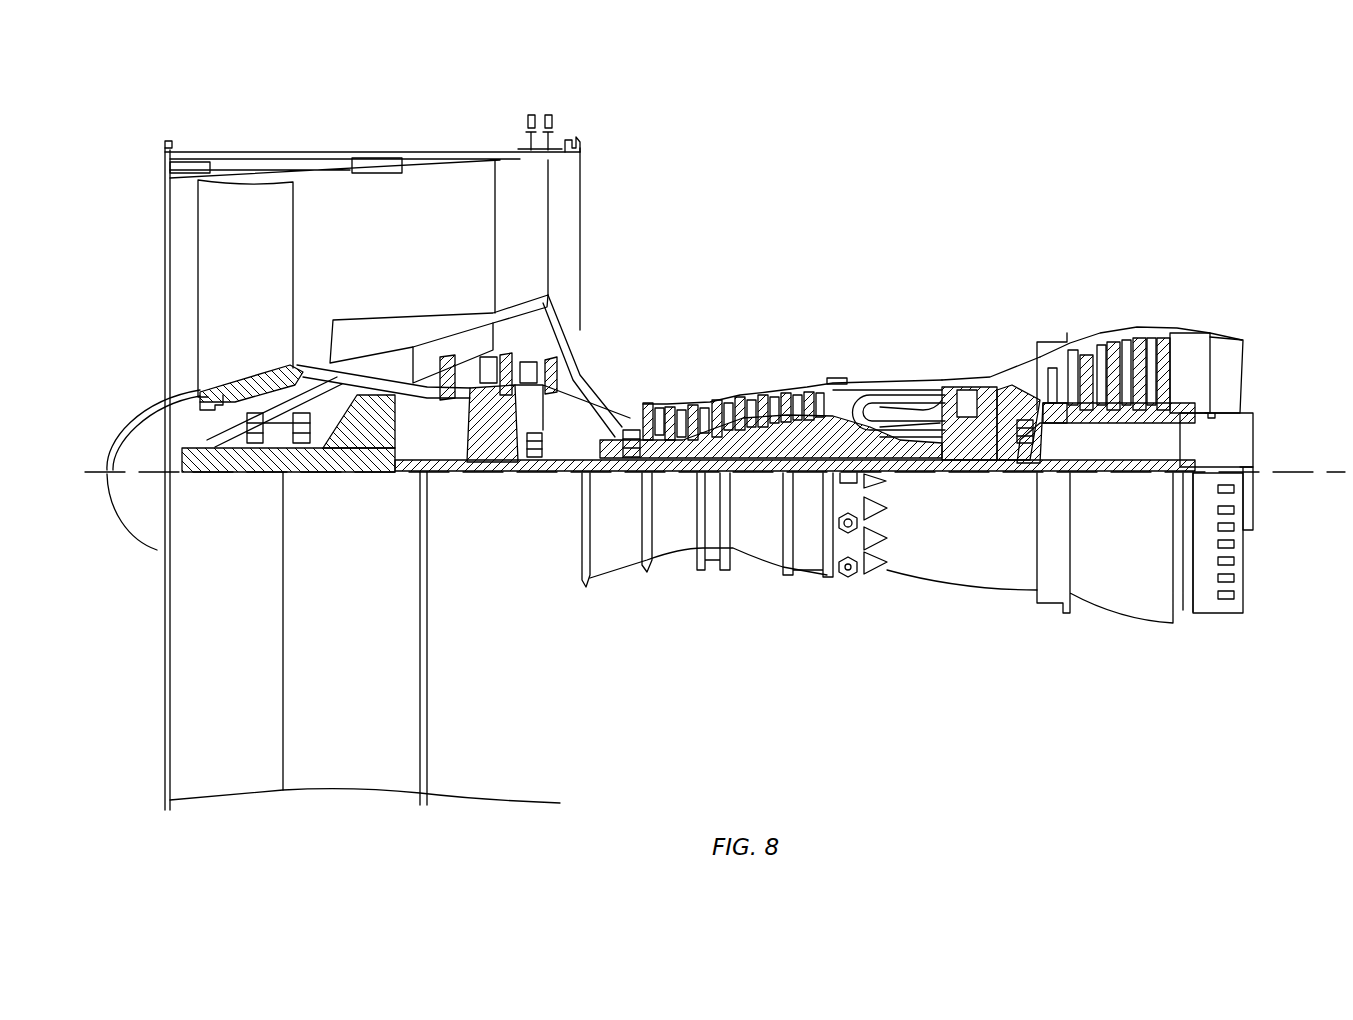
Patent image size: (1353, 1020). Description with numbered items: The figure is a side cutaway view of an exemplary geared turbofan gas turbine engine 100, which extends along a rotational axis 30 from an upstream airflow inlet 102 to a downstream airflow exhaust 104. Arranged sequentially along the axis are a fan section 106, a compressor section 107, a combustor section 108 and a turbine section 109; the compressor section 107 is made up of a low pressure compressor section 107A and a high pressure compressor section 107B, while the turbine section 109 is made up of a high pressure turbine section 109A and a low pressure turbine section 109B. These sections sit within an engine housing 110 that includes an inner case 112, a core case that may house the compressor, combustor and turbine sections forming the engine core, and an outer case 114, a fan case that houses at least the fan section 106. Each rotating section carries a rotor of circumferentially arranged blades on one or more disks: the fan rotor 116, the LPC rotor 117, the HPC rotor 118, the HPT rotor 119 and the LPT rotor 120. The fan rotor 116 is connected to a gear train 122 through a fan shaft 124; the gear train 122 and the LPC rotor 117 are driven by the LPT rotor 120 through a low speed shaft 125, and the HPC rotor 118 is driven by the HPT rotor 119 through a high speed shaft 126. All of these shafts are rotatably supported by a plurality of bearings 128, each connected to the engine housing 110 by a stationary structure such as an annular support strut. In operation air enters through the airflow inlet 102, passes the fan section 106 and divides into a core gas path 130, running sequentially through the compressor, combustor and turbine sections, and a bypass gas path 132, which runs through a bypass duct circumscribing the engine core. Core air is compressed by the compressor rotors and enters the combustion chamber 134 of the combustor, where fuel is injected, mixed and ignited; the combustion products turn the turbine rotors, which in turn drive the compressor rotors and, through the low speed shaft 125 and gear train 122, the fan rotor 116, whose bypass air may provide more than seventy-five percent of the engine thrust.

The geared turbofan gas turbine engine 100 is at (130, 128).
The rotational axis 30 is at (1305, 490).
The airflow inlet 102 is at (165, 232).
The airflow exhaust 104 is at (1250, 372).
The fan section 106 is at (340, 135).
The compressor section 107 is at (810, 72).
The low pressure compressor section 107A is at (585, 113).
The high pressure compressor section 107B is at (805, 310).
The combustor section 108 is at (886, 346).
The turbine section 109 is at (1200, 238).
The high pressure turbine section 109A is at (1015, 310).
The low pressure turbine section 109B is at (1200, 310).
The engine housing 110 is at (598, 584).
The inner case 112 is at (803, 575).
The outer case 114 is at (560, 803).
The fan rotor 116 is at (178, 393).
The LPC rotor 117 is at (480, 430).
The HPC rotor 118 is at (763, 445).
The HPT rotor 119 is at (972, 462).
The LPT rotor 120 is at (1108, 418).
The gear train 122 is at (377, 475).
The fan shaft 124 is at (237, 475).
The low speed shaft 125 is at (1112, 478).
The high speed shaft 126 is at (905, 462).
The bearings 128 is at (273, 475).
The core gas path 130 is at (608, 396).
The bypass gas path 132 is at (415, 266).
The combustion chamber 134 is at (895, 405).